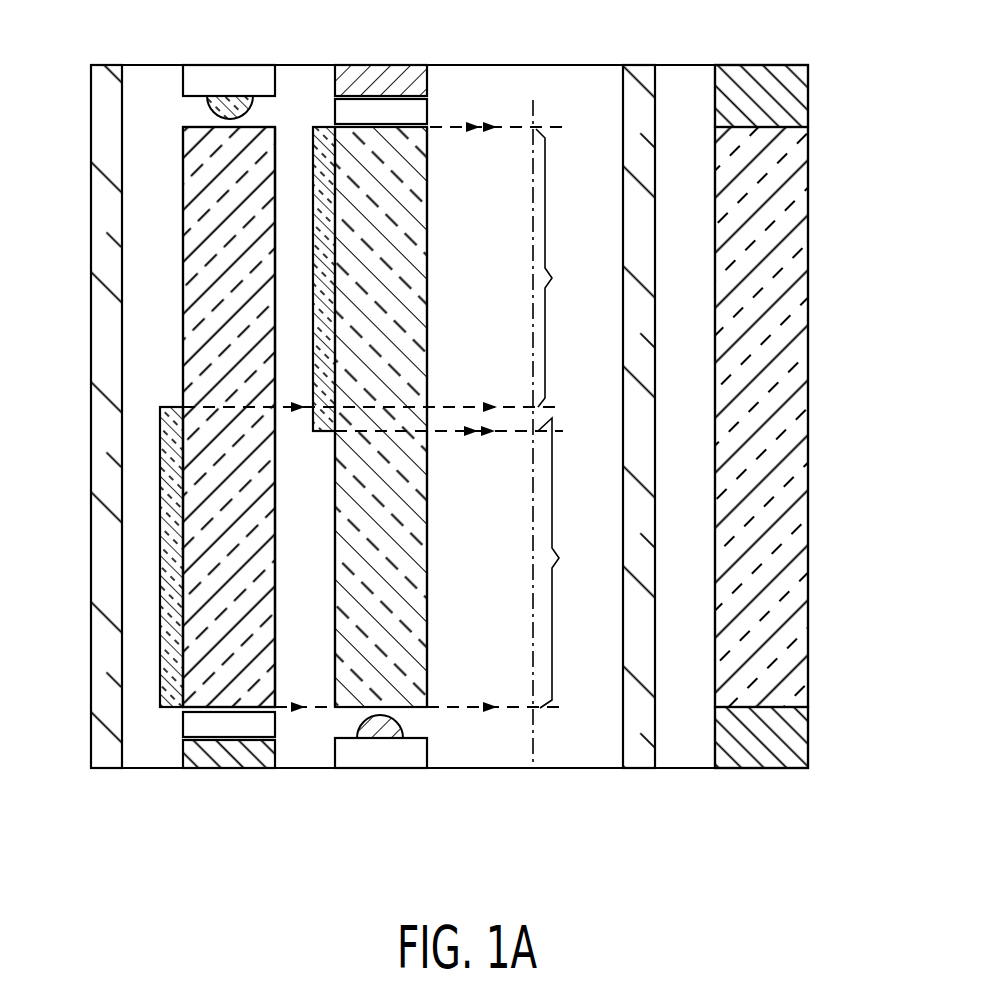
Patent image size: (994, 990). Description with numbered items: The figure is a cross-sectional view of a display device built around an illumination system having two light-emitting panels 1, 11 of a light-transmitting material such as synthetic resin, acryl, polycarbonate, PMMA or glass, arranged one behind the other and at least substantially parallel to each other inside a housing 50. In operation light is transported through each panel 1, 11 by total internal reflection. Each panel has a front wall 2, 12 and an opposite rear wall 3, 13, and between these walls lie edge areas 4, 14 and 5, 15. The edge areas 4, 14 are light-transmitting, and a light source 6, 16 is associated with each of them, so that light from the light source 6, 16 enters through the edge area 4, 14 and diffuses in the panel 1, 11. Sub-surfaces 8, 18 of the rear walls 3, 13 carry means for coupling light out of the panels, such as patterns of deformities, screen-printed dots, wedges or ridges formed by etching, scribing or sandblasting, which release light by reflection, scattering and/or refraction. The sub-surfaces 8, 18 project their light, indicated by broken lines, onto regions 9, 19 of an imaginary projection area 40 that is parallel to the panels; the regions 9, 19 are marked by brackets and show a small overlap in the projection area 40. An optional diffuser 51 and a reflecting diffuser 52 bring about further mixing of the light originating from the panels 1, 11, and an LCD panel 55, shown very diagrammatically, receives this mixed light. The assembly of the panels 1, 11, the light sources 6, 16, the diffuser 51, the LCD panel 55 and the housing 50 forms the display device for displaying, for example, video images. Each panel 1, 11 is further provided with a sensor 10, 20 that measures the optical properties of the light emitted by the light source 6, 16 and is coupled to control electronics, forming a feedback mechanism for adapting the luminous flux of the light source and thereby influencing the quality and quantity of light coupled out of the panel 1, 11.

The light-emitting panel 1 is at (203, 312).
The front wall 2 is at (275, 135).
The rear wall 3 is at (183, 250).
The edge area 4 is at (185, 128).
The edge area 5 is at (258, 695).
The light source 6 is at (208, 117).
The sub-surface 8 is at (172, 512).
The region 9 is at (558, 563).
The sensor 10 is at (193, 722).
The light-emitting panel 11 is at (400, 512).
The front wall 12 is at (427, 690).
The rear wall 13 is at (335, 607).
The edge area 14 is at (402, 706).
The edge area 15 is at (427, 145).
The light source 16 is at (350, 722).
The sub-surface 18 is at (316, 163).
The region 19 is at (561, 268).
The sensor 20 is at (345, 107).
The imaginary projection area 40 is at (530, 110).
The housing 50 is at (590, 770).
The diffuser 51 is at (628, 108).
The reflecting diffuser 52 is at (108, 630).
The LCD panel 55 is at (798, 228).